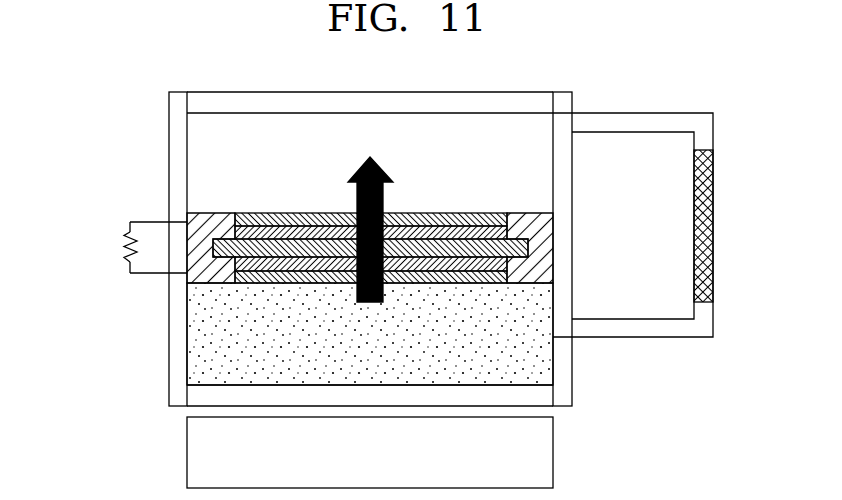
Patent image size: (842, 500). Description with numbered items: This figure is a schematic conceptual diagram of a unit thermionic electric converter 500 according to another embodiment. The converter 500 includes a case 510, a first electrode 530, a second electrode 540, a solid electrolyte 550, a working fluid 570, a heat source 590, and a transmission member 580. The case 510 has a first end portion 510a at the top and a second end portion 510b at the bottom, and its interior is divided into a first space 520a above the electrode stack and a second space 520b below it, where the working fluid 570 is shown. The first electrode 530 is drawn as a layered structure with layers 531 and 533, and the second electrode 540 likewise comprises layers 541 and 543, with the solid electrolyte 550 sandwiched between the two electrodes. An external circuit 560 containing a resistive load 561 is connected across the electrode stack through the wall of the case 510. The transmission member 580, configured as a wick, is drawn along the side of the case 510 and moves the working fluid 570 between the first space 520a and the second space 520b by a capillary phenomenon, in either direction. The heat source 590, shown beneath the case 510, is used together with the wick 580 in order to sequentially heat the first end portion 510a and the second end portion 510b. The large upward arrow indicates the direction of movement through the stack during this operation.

The unit thermionic electric converter 500 is at (716, 42).
The case 510 is at (567, 103).
The first end portion 510a is at (523, 92).
The second end portion 510b is at (522, 407).
The first space 520a is at (512, 160).
The second space 520b is at (520, 343).
The first electrode 530 is at (633, 182).
The first current collector 531 is at (507, 222).
The first active material layer 533 is at (504, 235).
The second electrode 540 is at (633, 277).
The second current collector 541 is at (507, 280).
The second active material layer 543 is at (507, 265).
The solid electrolyte 550 is at (528, 252).
The external circuit wiring 560 is at (143, 276).
The load resistor 561 is at (123, 244).
The working fluid 570 is at (515, 363).
The transmission member 580 is at (703, 237).
The heat source 590 is at (545, 467).